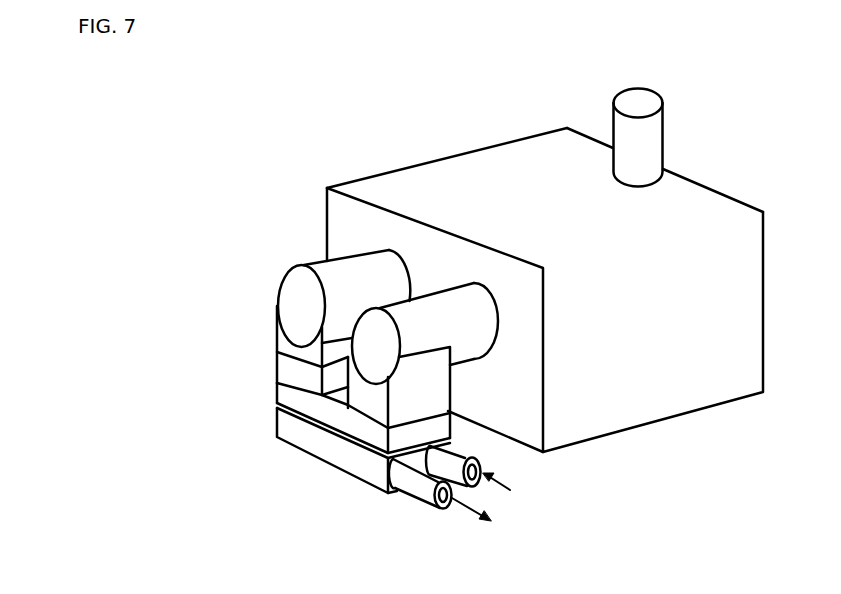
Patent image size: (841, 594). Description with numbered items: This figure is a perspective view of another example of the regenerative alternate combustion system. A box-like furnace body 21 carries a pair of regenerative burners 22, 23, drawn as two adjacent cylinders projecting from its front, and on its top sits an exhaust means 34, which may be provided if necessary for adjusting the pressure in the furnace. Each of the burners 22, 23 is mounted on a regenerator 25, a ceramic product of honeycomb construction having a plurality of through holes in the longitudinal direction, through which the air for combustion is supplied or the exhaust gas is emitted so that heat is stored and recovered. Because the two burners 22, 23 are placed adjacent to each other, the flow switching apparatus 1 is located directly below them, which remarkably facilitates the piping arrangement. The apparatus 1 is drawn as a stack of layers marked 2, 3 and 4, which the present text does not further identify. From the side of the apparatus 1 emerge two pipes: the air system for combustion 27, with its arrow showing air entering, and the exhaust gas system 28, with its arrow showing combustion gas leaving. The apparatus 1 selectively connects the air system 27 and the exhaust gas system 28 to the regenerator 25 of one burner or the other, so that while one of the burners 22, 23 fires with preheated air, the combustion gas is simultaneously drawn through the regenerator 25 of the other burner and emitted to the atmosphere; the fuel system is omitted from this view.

The flow switching apparatus 1 is at (301, 430).
The lower substrate layer 2 is at (301, 450).
The thin intermediate layer 3 is at (277, 407).
The upper substrate layer 4 is at (277, 392).
The furnace body 21 is at (431, 163).
The regenerative burner 22 is at (312, 263).
The regenerative burner 23 is at (472, 349).
The regenerator 25 is at (277, 360).
The air system for combustion 27 is at (478, 453).
The exhaust gas system 28 is at (412, 485).
The exhaust means 34 is at (656, 138).